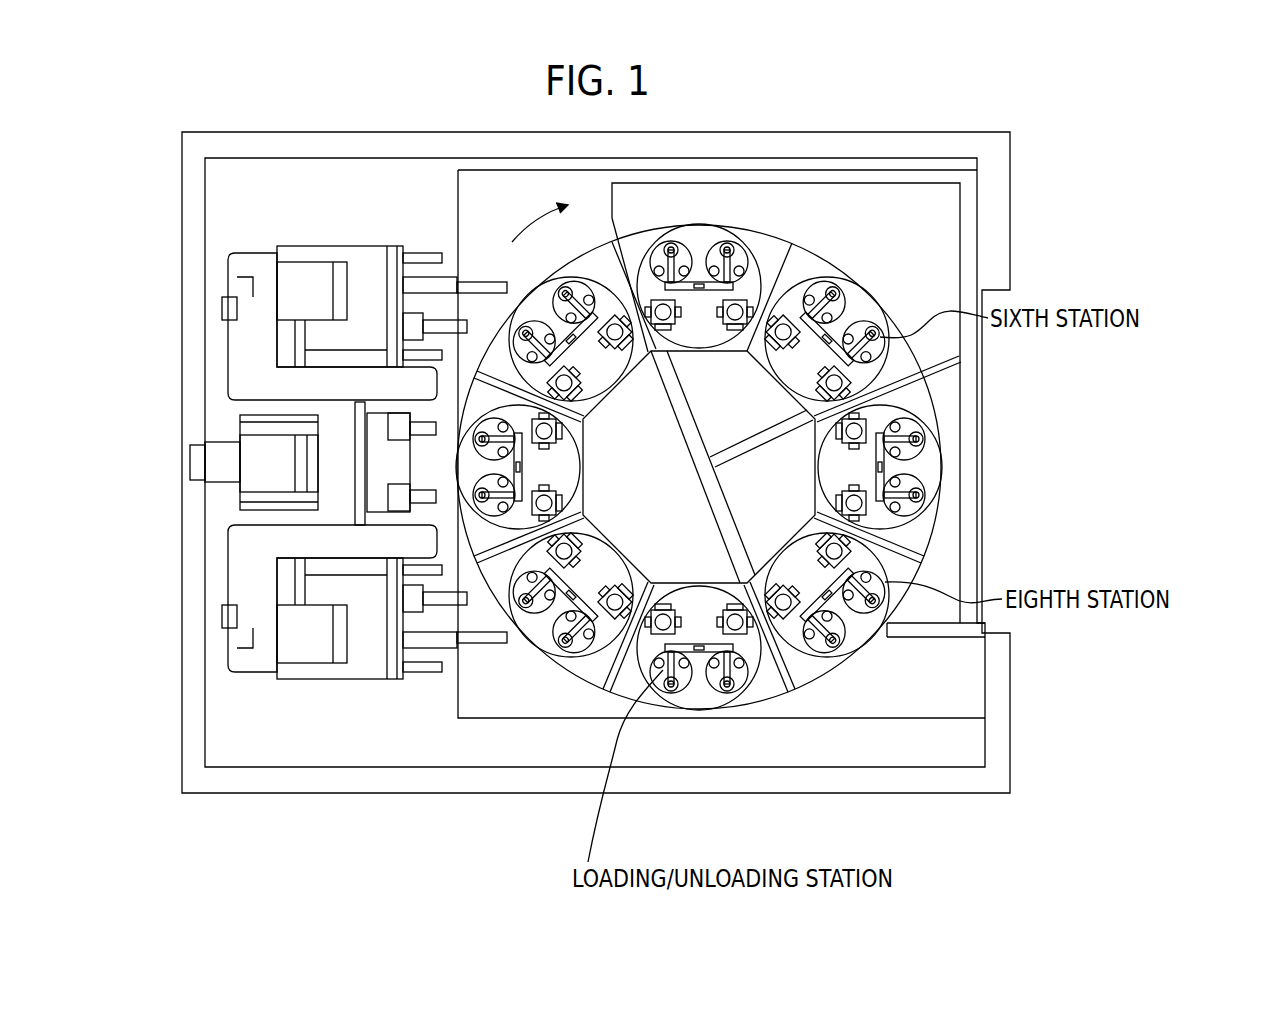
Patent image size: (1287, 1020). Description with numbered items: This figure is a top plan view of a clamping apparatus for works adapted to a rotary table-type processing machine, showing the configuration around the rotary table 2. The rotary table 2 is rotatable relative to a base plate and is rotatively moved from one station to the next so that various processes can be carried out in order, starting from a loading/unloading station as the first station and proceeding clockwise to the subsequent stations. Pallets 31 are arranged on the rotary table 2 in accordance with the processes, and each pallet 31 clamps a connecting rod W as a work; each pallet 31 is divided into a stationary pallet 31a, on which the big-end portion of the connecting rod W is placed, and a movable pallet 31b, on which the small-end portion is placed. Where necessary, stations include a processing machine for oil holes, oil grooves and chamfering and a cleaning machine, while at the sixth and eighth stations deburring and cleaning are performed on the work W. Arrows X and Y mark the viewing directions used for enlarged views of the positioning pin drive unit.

The rotary table 2 is at (843, 544).
The pallet 31 is at (933, 728).
The stationary pallet 31a is at (752, 663).
The movable pallet 31b is at (757, 650).
The connecting rod W is at (540, 640).
The viewing direction X is at (955, 392).
The viewing direction Y is at (880, 282).